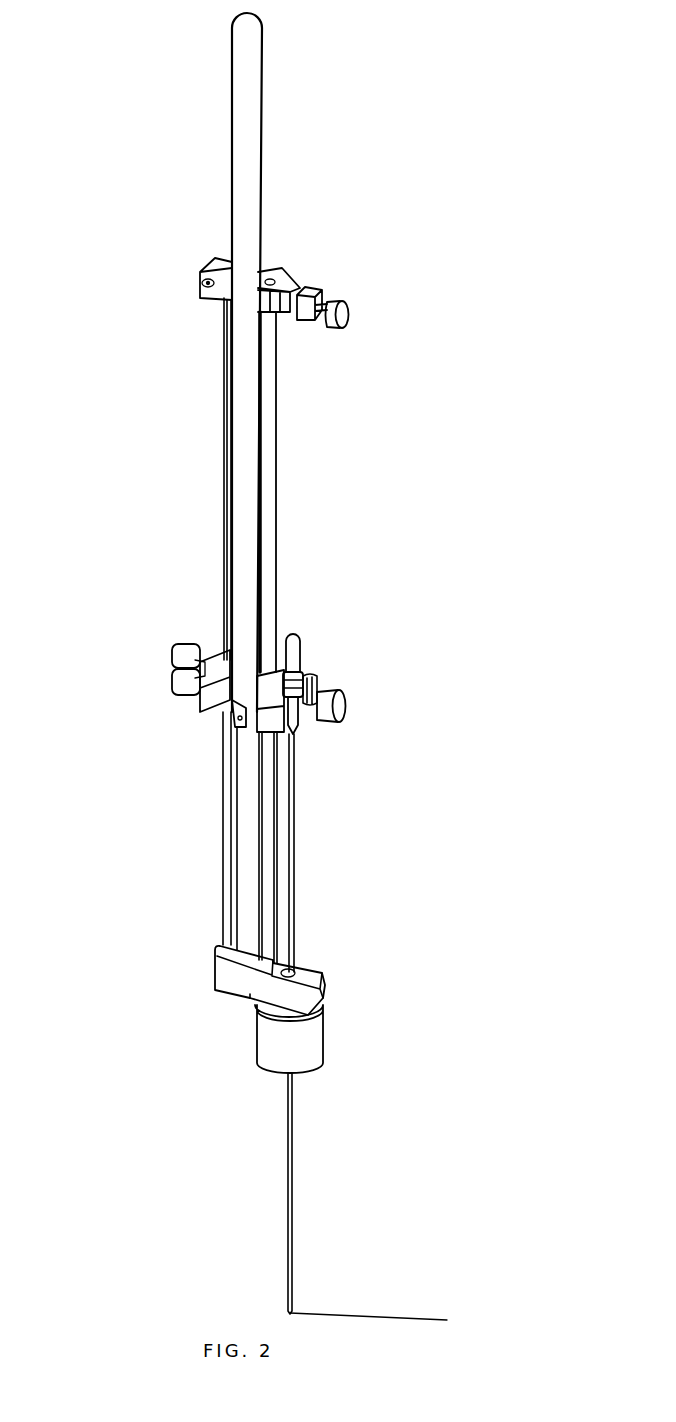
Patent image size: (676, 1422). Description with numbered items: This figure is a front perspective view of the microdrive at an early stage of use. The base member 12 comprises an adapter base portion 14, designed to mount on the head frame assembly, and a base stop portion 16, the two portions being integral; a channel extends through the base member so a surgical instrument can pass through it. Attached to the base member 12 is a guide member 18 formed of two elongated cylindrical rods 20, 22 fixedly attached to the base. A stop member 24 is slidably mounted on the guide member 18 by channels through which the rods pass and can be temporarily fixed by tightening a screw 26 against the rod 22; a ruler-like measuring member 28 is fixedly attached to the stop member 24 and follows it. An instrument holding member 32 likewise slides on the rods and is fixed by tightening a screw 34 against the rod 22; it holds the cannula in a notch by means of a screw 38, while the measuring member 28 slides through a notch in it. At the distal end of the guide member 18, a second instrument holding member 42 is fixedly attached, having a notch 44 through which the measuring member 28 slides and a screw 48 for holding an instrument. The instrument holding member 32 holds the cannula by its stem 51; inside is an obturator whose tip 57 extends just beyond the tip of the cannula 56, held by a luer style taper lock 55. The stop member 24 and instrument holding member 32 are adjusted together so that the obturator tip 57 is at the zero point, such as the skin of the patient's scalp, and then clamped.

The base member 12 is at (340, 1035).
The adapter base portion 14 is at (243, 1193).
The base stop portion 16 is at (222, 961).
The guide member 18 is at (320, 492).
The elongated cylindrical rod 20 is at (342, 847).
The elongated cylindrical rod 22 is at (178, 624).
The stop member 24 is at (183, 733).
The screw 26 is at (152, 687).
The measuring member 28 is at (242, 362).
The instrument holding member 32 is at (206, 647).
The screw 34 is at (142, 628).
The screw 38 is at (346, 729).
The second instrument holding member 42 is at (276, 257).
The notch 44 is at (371, 262).
The screw 48 is at (366, 297).
The stem 51 is at (342, 853).
The luer style taper lock 55 is at (341, 645).
The tip of the cannula 56 is at (411, 1286).
The obturator tip 57 is at (305, 927).